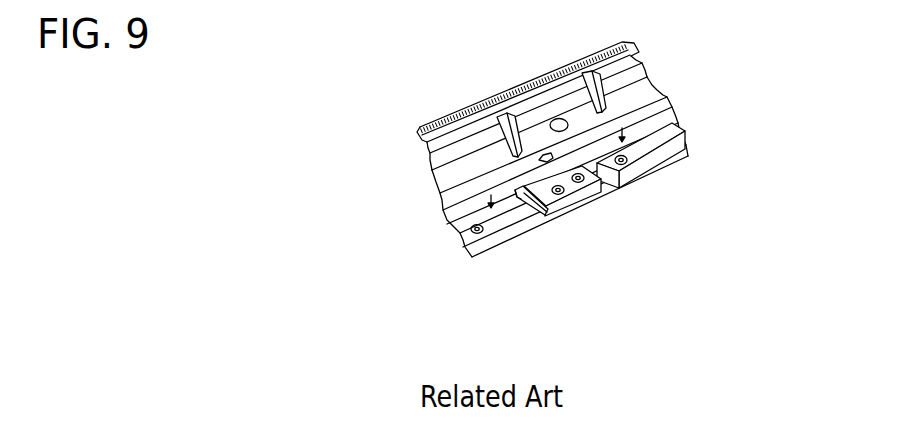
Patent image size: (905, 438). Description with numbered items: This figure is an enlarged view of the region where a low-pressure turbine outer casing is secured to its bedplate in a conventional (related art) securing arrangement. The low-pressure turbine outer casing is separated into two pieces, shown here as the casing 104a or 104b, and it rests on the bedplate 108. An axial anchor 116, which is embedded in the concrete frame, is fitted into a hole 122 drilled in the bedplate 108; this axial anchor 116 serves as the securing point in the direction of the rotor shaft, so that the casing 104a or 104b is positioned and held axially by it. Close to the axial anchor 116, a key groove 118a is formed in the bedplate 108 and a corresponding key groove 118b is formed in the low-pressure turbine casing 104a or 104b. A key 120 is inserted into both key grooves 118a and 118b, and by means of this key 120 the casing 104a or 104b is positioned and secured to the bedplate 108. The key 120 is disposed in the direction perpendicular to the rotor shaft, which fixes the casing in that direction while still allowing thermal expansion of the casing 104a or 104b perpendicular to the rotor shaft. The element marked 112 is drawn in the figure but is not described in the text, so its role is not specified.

The low-pressure turbine outer casing 104a is at (637, 106).
The low-pressure turbine outer casing 104b is at (638, 89).
The bedplate 108 is at (508, 243).
The bracket 112 is at (584, 176).
The axial anchor 116 is at (565, 196).
The key groove 118a is at (517, 192).
The key groove 118b is at (538, 160).
The key 120 is at (543, 214).
The hole 122 is at (468, 231).